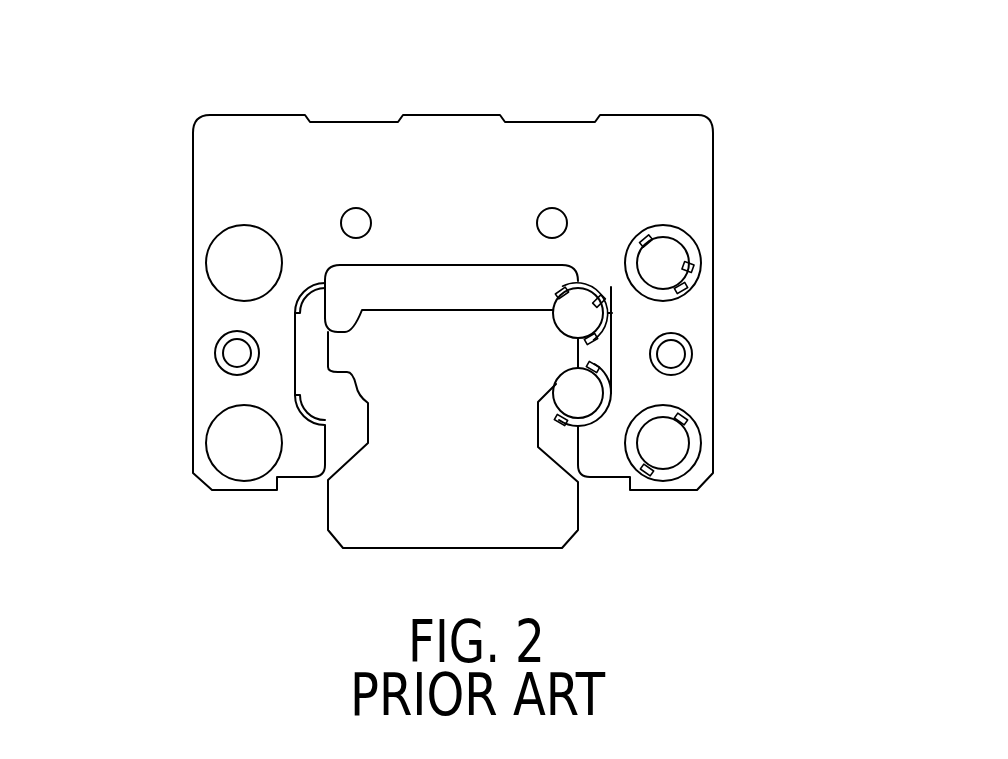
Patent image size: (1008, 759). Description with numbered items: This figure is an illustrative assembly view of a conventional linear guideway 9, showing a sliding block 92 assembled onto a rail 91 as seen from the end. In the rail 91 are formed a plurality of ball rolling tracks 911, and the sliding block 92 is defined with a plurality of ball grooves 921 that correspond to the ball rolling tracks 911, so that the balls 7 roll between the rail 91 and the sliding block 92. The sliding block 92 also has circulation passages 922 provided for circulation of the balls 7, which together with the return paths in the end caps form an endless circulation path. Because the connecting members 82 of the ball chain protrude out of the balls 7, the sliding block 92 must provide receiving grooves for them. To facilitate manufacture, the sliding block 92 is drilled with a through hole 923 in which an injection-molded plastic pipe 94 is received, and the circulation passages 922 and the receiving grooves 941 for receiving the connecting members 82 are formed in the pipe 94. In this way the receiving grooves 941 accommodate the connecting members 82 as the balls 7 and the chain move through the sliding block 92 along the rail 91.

The ball 7 is at (573, 387).
The connecting member 82 is at (648, 232).
The linear guideway 9 is at (306, 511).
The rail 91 is at (543, 510).
The sliding block 92 is at (453, 187).
The ball rolling track 911 is at (324, 287).
The ball groove 921 is at (611, 298).
The circulation passage 922 is at (692, 278).
The through hole 923 is at (222, 240).
The pipe 94 is at (653, 297).
The receiving groove 941 is at (687, 430).